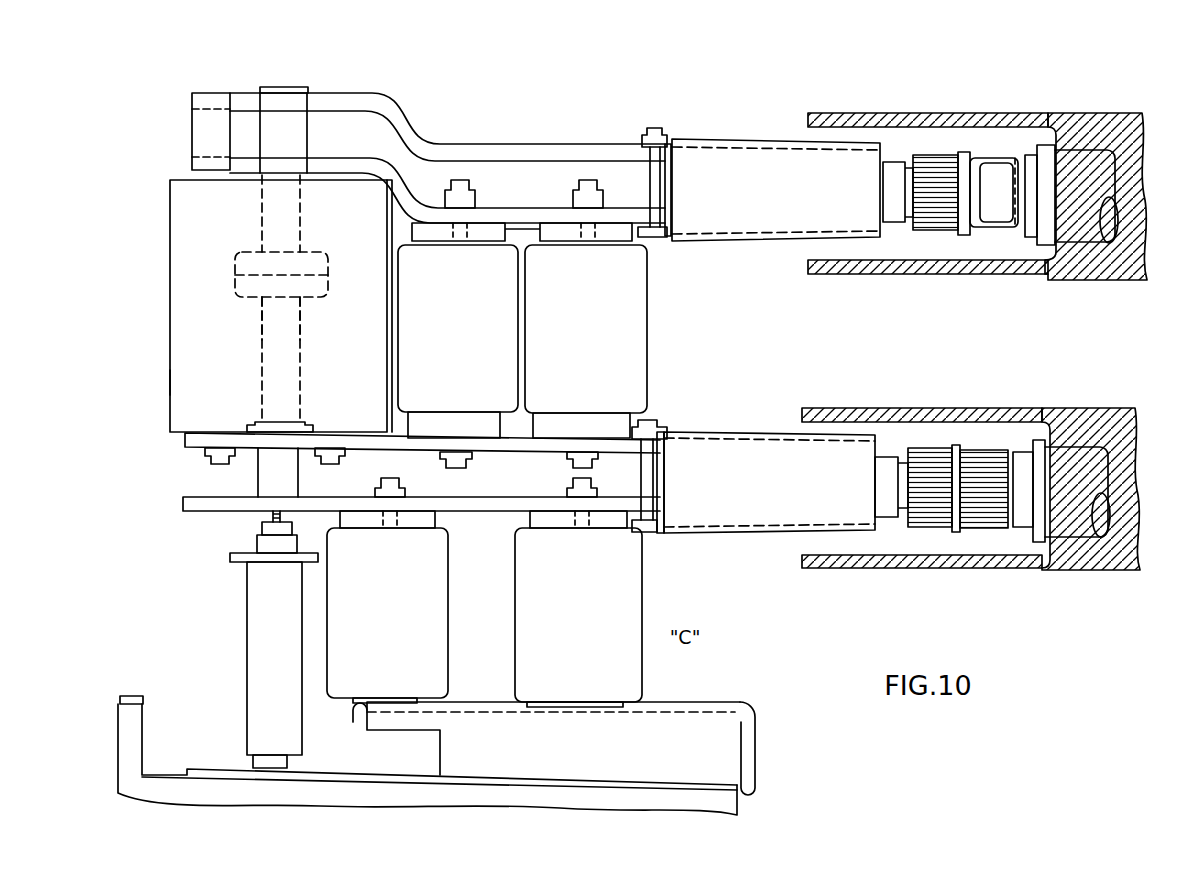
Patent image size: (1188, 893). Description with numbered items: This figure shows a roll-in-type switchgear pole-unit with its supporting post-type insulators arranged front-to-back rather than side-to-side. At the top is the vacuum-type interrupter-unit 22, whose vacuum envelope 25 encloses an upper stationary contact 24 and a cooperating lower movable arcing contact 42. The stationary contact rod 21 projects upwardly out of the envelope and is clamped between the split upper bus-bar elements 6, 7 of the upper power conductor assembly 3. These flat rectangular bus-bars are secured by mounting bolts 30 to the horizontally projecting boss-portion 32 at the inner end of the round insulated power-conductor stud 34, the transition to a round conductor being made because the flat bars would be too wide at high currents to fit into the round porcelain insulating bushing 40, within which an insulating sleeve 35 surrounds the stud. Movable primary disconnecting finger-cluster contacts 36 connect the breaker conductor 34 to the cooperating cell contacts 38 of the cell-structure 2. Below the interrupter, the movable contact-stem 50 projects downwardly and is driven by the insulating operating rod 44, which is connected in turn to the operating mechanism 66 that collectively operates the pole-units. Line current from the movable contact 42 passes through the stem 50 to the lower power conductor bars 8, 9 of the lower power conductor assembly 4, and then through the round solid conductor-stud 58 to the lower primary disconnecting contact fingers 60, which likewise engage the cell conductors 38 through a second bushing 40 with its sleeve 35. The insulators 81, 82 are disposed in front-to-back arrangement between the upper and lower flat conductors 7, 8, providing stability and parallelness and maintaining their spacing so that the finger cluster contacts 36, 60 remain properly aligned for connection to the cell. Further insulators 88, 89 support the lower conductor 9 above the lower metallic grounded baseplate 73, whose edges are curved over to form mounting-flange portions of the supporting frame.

The cell-structure 2 is at (1098, 278).
The upper power conductor assembly 3 is at (732, 139).
The lower power conductor assembly 4 is at (703, 533).
The upper power conductor bus-bar element 6 is at (367, 96).
The upper power conductor bus-bar element 7 is at (340, 159).
The lower power conductor bar 8 is at (186, 440).
The lower power conductor bar 9 is at (186, 499).
The stationary contact rod 21 is at (302, 88).
The vacuum-type interrupter-unit 22 is at (170, 347).
The upper stationary contact 24 is at (330, 271).
The vacuum envelope 25 is at (149, 382).
The mounting bolts 30 is at (653, 128).
The boss-portion 32 is at (668, 196).
The round insulated power-conductor stud 34 is at (728, 241).
The insulating sleeves 35 is at (772, 240).
The movable primary disconnecting finger-cluster contacts 36 is at (930, 156).
The cell contacts 38 is at (1000, 160).
The insulating bushing 40 is at (838, 113).
The lower movable arcing contact 42 is at (330, 290).
The insulating operating rod 44 is at (247, 610).
The movable contact-stem 50 is at (260, 332).
The round solid conductor-stud 58 is at (893, 458).
The lower primary disconnecting contact fingers 60 is at (922, 528).
The operating mechanism 66 is at (546, 751).
The lower metallic grounded baseplate 73 is at (702, 700).
The post-type supporting insulator 81 is at (437, 341).
The post-type supporting insulator 82 is at (577, 346).
The motor 88 is at (450, 582).
The motor 89 is at (645, 586).